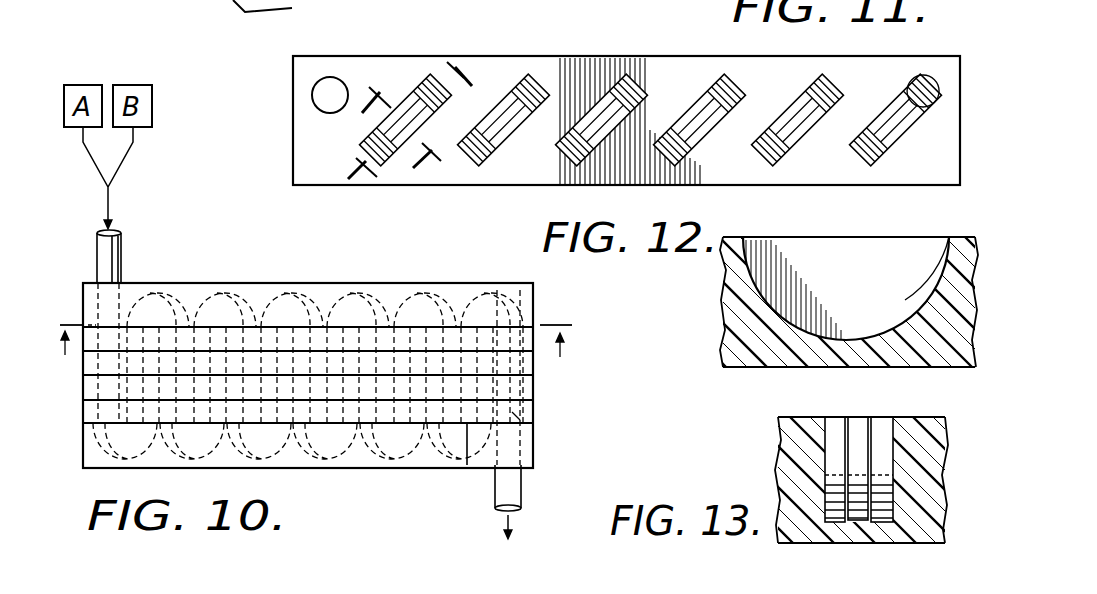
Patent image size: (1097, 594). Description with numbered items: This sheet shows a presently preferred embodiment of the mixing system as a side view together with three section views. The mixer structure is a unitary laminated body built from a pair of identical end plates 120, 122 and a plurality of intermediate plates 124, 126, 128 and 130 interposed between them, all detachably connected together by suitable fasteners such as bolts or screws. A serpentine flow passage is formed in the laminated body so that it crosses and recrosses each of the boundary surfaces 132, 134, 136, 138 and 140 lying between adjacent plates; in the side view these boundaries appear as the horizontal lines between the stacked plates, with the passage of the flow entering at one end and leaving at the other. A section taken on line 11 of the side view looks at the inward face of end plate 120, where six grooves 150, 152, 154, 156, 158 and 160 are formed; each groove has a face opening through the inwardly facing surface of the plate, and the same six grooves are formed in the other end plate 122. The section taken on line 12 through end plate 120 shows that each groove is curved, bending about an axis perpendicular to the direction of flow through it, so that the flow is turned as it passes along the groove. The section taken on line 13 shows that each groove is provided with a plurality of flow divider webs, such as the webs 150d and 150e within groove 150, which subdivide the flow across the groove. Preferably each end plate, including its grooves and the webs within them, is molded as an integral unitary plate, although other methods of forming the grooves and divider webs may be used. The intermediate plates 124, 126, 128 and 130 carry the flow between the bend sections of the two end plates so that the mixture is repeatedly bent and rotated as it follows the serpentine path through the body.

In FIG. 10, the section line 11- 11 is at (328, 356).
In FIG. 11, the section line 12- 12 is at (429, 142).
In FIG. 11, the section line 13- 13 is at (410, 116).
In FIG. 11, the end plate 120 is at (595, 63).
In FIG. 10, the end plate 120 is at (398, 285).
In FIG. 12, the end plate 120 is at (732, 307).
In FIG. 13, the end plate 120 is at (793, 449).
In FIG. 10, the end plate 122 is at (400, 468).
In FIG. 10, the intermediate plate 124 is at (531, 330).
In FIG. 10, the intermediate plate 126 is at (532, 364).
In FIG. 10, the intermediate plate 128 is at (532, 395).
In FIG. 10, the intermediate plate 130 is at (516, 416).
In FIG. 10, the boundary surface 132 is at (535, 320).
In FIG. 10, the boundary surface 134 is at (532, 352).
In FIG. 10, the boundary surface 136 is at (532, 380).
In FIG. 10, the boundary surface 138 is at (532, 406).
In FIG. 10, the boundary surface 140 is at (467, 465).
In FIG. 11, the groove 150 is at (433, 67).
In FIG. 10, the groove 150 is at (176, 277).
In FIG. 12, the groove 150 is at (817, 232).
In FIG. 13, the groove 150 is at (830, 413).
In FIG. 13, the flow divider web 150d is at (874, 428).
In FIG. 12, the flow divider web 150e is at (875, 248).
In FIG. 13, the flow divider web 150e is at (857, 418).
In FIG. 11, the groove 152 is at (535, 67).
In FIG. 10, the groove 152 is at (234, 277).
In FIG. 11, the groove 154 is at (625, 67).
In FIG. 10, the groove 154 is at (292, 277).
In FIG. 11, the groove 156 is at (738, 44).
In FIG. 10, the groove 156 is at (353, 291).
In FIG. 11, the groove 158 is at (830, 67).
In FIG. 10, the groove 158 is at (437, 291).
In FIG. 11, the groove 160 is at (927, 68).
In FIG. 10, the groove 160 is at (500, 291).